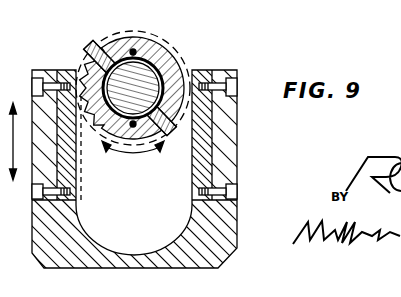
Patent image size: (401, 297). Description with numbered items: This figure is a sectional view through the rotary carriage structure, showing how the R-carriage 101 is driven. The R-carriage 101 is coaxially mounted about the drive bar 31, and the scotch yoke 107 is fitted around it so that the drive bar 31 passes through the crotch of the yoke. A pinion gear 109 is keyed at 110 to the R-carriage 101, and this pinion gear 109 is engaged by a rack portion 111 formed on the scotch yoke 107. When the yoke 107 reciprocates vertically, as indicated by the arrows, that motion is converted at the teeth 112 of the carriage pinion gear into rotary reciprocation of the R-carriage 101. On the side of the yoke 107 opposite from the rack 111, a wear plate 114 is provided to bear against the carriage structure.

The scotch yoke 107 is at (230, 233).
The teeth 112 is at (80, 62).
The rack portion 111 is at (76, 192).
The wear plate 114 is at (205, 70).
The pinion gear 109 is at (172, 50).
The R-carriage 101 is at (180, 68).
The key 110 is at (134, 50).
The drive bar 31 is at (115, 58).